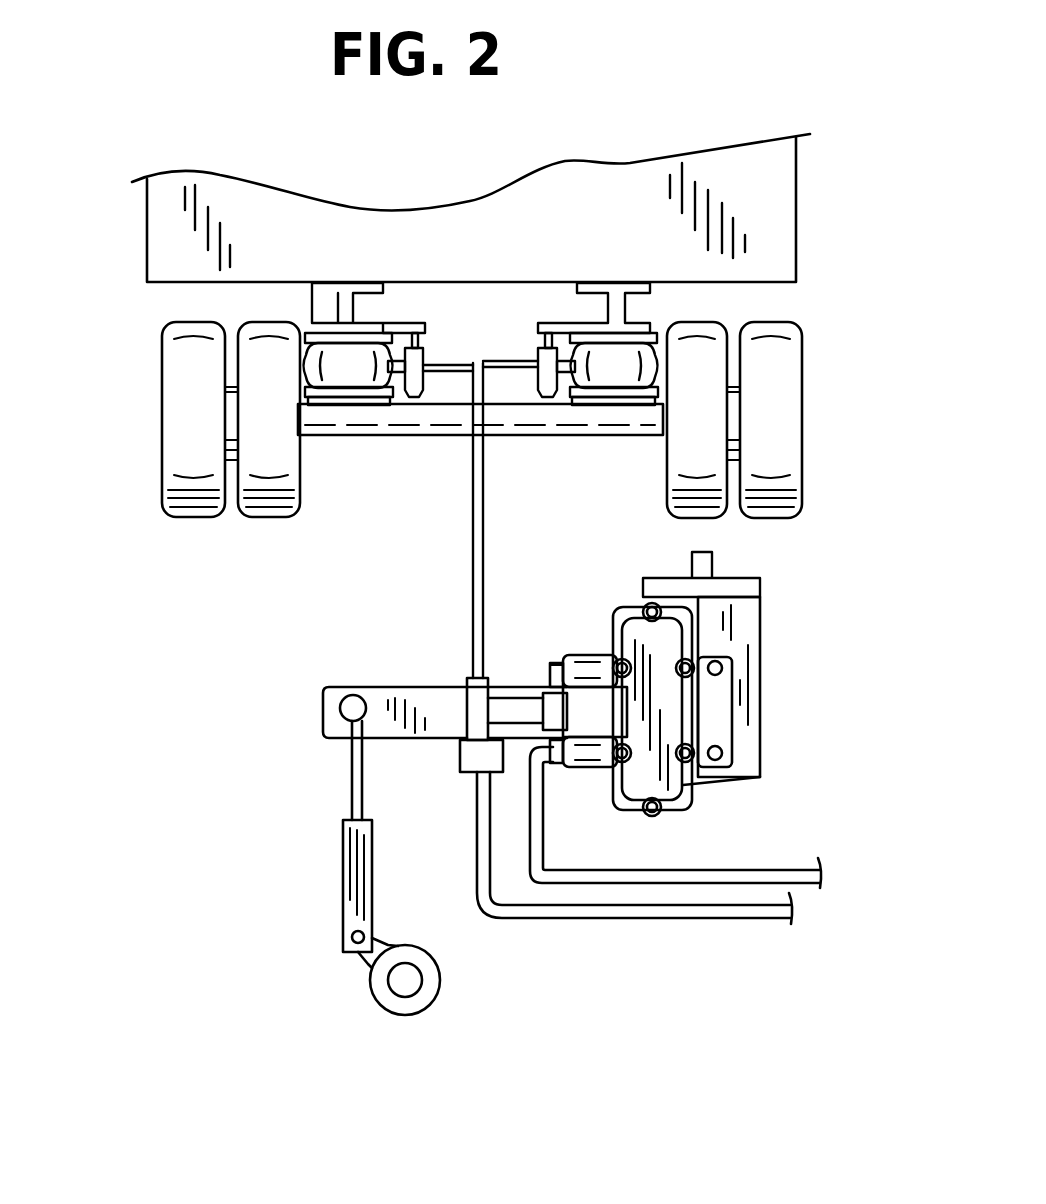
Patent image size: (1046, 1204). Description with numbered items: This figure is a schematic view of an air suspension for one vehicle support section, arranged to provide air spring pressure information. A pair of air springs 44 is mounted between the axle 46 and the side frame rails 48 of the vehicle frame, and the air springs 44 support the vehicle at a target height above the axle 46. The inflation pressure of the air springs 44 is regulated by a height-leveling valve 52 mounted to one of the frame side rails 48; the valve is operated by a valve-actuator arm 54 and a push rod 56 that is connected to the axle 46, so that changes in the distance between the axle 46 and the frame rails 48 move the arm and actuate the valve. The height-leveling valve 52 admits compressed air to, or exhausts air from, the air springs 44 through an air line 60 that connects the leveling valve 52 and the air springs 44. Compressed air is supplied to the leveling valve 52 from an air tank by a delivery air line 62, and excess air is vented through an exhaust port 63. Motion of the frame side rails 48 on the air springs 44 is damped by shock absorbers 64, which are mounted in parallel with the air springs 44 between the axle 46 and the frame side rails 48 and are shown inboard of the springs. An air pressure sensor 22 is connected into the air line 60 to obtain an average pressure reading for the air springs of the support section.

The air pressure sensor 22 is at (460, 763).
The air springs 44 is at (310, 360).
The axle 46 is at (353, 440).
The side frame rails 48 is at (578, 285).
The height-leveling valve 52 is at (760, 757).
The valve-actuator arm 54 is at (368, 687).
The push rod 56 is at (350, 787).
The air line 60 is at (487, 510).
The delivery air line 62 is at (787, 870).
The exhaust port 63 is at (545, 652).
The shock absorbers 64 is at (437, 376).